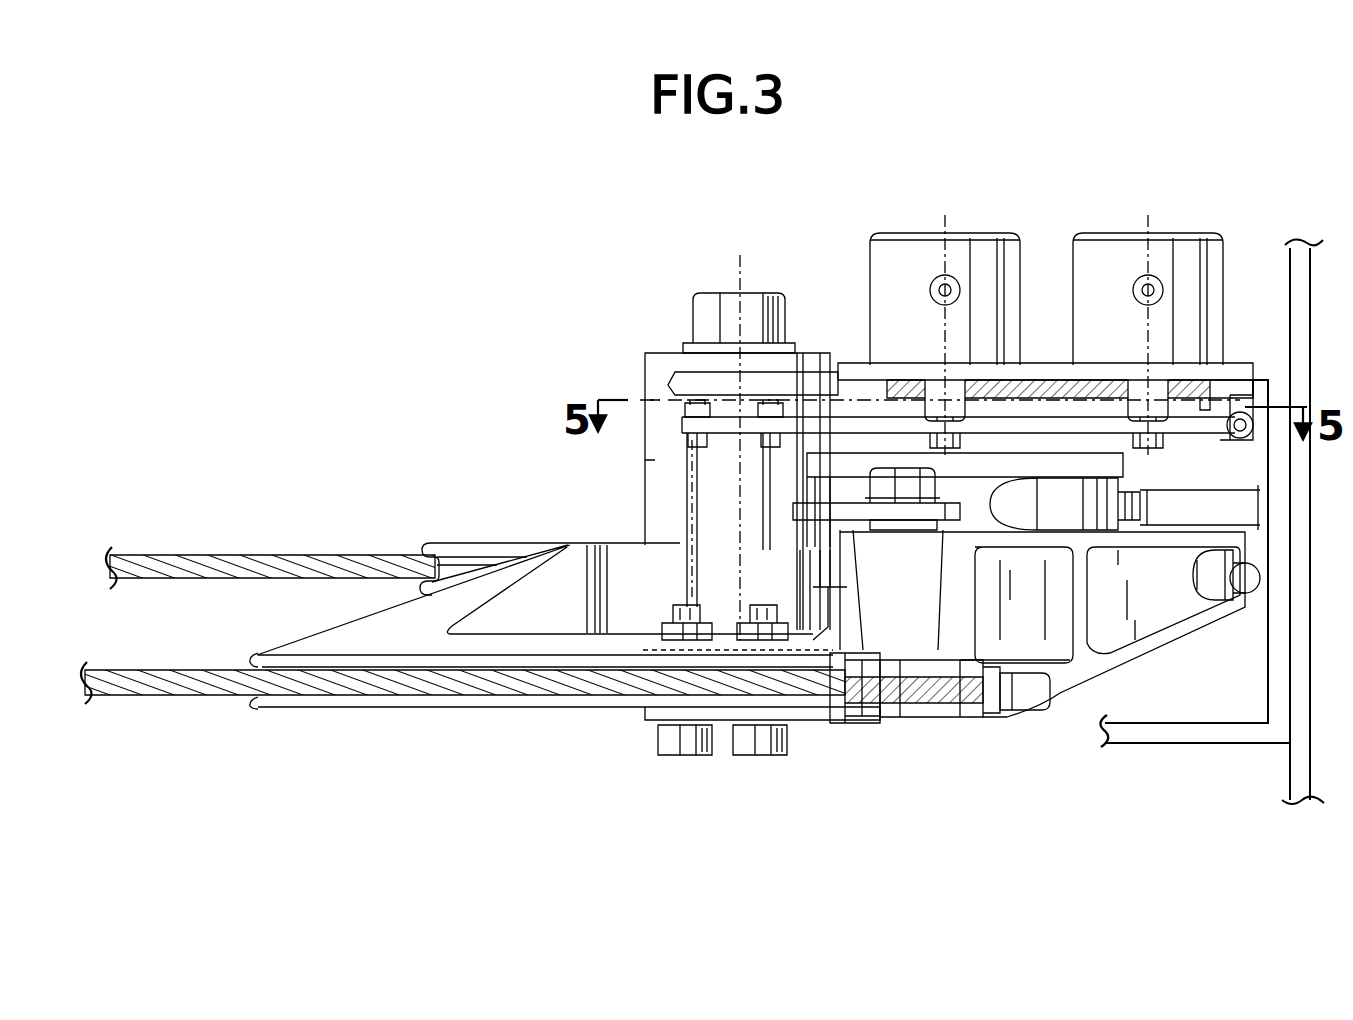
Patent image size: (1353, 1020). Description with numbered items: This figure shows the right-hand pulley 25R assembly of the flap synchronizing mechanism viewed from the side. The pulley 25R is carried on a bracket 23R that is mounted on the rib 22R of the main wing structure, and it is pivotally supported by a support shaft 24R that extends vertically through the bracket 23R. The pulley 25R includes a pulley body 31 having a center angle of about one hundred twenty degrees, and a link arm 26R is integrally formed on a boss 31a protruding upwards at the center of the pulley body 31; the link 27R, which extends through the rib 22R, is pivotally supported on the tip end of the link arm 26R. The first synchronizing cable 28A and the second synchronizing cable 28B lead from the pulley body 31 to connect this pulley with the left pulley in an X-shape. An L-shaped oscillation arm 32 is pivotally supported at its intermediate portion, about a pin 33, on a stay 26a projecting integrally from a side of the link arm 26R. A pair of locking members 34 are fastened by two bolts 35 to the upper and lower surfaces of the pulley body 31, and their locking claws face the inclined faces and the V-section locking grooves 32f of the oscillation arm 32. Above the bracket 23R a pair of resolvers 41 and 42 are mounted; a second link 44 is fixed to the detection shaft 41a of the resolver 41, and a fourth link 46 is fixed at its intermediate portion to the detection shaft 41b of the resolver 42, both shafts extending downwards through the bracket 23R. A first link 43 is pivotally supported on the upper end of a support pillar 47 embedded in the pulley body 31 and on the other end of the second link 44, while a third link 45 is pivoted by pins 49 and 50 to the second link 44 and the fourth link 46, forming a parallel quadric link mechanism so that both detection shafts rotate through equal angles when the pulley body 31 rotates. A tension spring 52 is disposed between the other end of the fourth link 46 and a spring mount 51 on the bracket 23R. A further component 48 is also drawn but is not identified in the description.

The rib 22R is at (1293, 780).
The bracket 23R is at (1255, 663).
The support shaft 24R is at (712, 305).
The pulley 25R is at (470, 496).
The link arm 26R is at (1025, 473).
The stay 26a is at (893, 505).
The link 27R is at (1185, 510).
The first synchronizing cable 28A is at (182, 695).
The second synchronizing cable 28B is at (198, 558).
The pulley body 31 is at (575, 540).
The boss 31a is at (650, 484).
The oscillation arm 32 is at (1078, 690).
The locking grooves 32f is at (905, 665).
The pin 33 is at (910, 483).
The locking members 34 is at (838, 650).
The bolts 35 is at (766, 752).
The resolver 41 is at (890, 223).
The detection shaft 41a is at (935, 407).
The detection shaft 41b is at (1140, 407).
The resolver 42 is at (1112, 223).
The first link 43 is at (730, 435).
The second link 44 is at (888, 425).
The third link 45 is at (1013, 415).
The fourth link 46 is at (1191, 407).
The support pillar 47 is at (690, 572).
The bolt 48 is at (770, 450).
The pin 49 is at (852, 455).
The pin 50 is at (1048, 446).
The spring mount 51 is at (1228, 443).
The tension spring 52 is at (1236, 415).